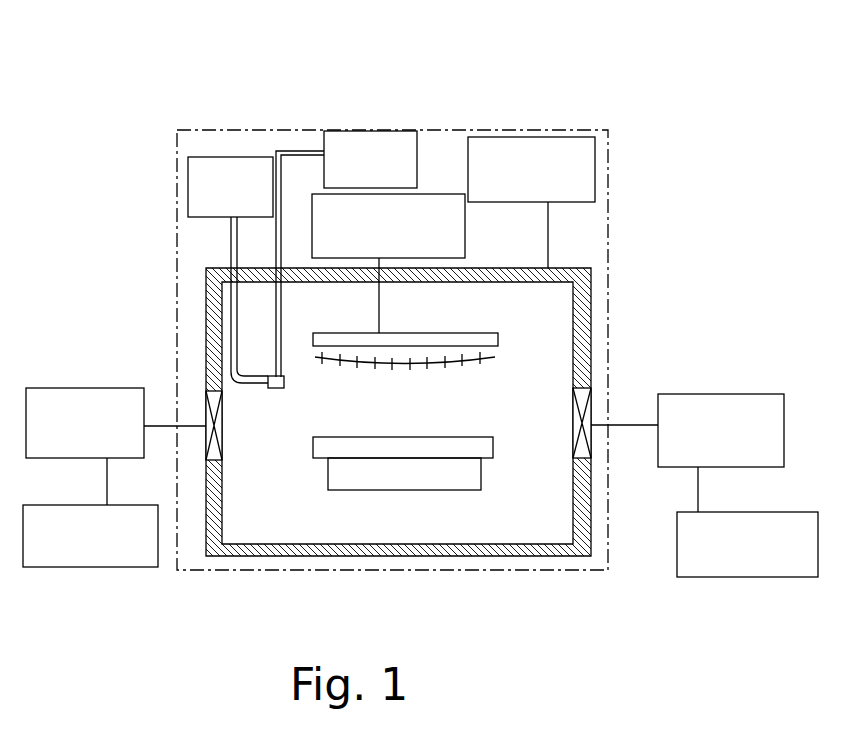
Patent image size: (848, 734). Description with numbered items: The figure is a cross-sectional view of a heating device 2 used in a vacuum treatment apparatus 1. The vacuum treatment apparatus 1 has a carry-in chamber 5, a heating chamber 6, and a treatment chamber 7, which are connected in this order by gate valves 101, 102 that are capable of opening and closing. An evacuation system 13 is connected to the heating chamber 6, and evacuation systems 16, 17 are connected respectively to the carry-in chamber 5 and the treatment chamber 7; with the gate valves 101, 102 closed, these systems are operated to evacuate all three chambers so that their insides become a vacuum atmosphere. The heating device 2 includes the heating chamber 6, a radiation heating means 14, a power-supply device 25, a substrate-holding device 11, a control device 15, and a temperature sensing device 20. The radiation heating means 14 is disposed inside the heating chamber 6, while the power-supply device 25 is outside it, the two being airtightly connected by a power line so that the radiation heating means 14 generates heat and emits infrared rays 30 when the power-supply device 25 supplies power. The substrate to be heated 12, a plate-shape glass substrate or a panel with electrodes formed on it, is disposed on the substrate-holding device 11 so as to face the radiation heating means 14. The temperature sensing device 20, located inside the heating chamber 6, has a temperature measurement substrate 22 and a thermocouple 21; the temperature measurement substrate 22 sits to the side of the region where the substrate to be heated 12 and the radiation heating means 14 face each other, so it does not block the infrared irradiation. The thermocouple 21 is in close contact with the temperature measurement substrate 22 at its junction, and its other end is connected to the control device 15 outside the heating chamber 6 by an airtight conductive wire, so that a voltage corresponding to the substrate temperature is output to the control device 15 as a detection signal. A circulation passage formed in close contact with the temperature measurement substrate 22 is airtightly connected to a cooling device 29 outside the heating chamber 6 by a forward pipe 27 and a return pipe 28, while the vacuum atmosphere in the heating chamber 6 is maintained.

The vacuum treatment apparatus 1 is at (76, 27).
The heating device 2 is at (496, 129).
The carry-in chamber 5 is at (69, 460).
The heating chamber 6 is at (367, 557).
The treatment chamber 7 is at (731, 468).
The gate valve 101 is at (205, 437).
The gate valve 102 is at (592, 432).
The substrate-holding device 11 is at (419, 491).
The substrate to be heated 12 is at (497, 447).
The evacuation system 13 is at (596, 185).
The radiation heating means 14 is at (421, 333).
The control device 15 is at (369, 131).
The evacuation system 16 is at (81, 569).
The evacuation system 17 is at (677, 526).
The temperature sensing device 20 is at (262, 394).
The thermocouple 21 is at (297, 151).
The temperature measurement substrate 22 is at (275, 390).
The power-supply device 25 is at (441, 194).
The forward pipe 27 is at (228, 338).
The return pipe 28 is at (257, 374).
The cooling device 29 is at (236, 157).
The infrared rays 30 is at (493, 355).